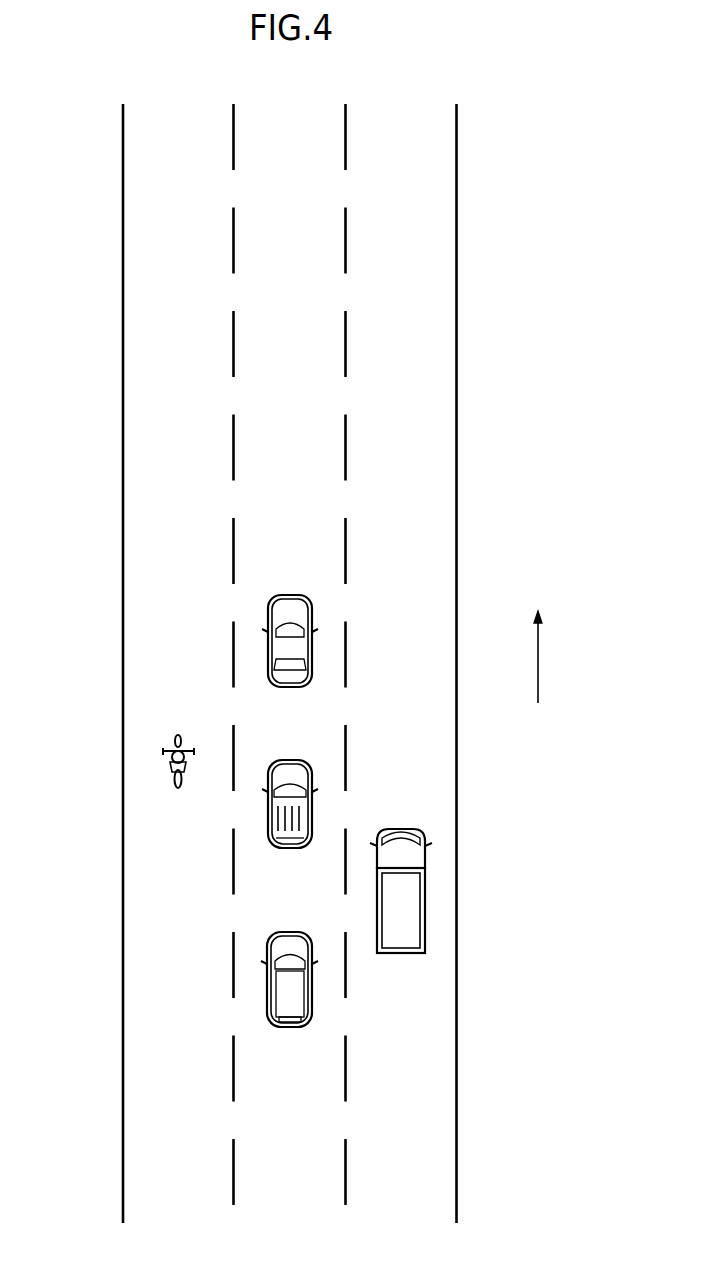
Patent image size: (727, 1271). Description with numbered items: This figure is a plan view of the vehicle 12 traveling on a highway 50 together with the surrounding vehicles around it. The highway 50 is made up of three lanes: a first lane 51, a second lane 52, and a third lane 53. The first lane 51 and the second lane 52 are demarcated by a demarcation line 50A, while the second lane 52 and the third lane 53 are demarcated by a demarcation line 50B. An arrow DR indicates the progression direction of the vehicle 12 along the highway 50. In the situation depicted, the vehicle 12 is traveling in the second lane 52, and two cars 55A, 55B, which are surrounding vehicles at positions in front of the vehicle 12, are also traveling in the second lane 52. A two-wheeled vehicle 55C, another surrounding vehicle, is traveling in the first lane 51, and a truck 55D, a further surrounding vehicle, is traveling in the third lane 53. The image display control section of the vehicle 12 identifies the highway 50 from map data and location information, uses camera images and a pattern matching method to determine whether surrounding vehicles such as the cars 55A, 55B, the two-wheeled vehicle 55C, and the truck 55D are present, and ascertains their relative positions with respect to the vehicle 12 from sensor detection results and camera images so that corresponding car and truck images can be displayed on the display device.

The highway 50 is at (488, 170).
The first lane 51 is at (135, 227).
The second lane 52 is at (252, 151).
The third lane 53 is at (440, 235).
The demarcation line 50A is at (233, 352).
The demarcation line 50B is at (345, 242).
The car 55A is at (268, 821).
The car 55B is at (268, 660).
The two-wheeled vehicle 55C is at (170, 781).
The truck 55D is at (425, 934).
The vehicle 12 is at (267, 1011).
The arrow DR is at (538, 668).